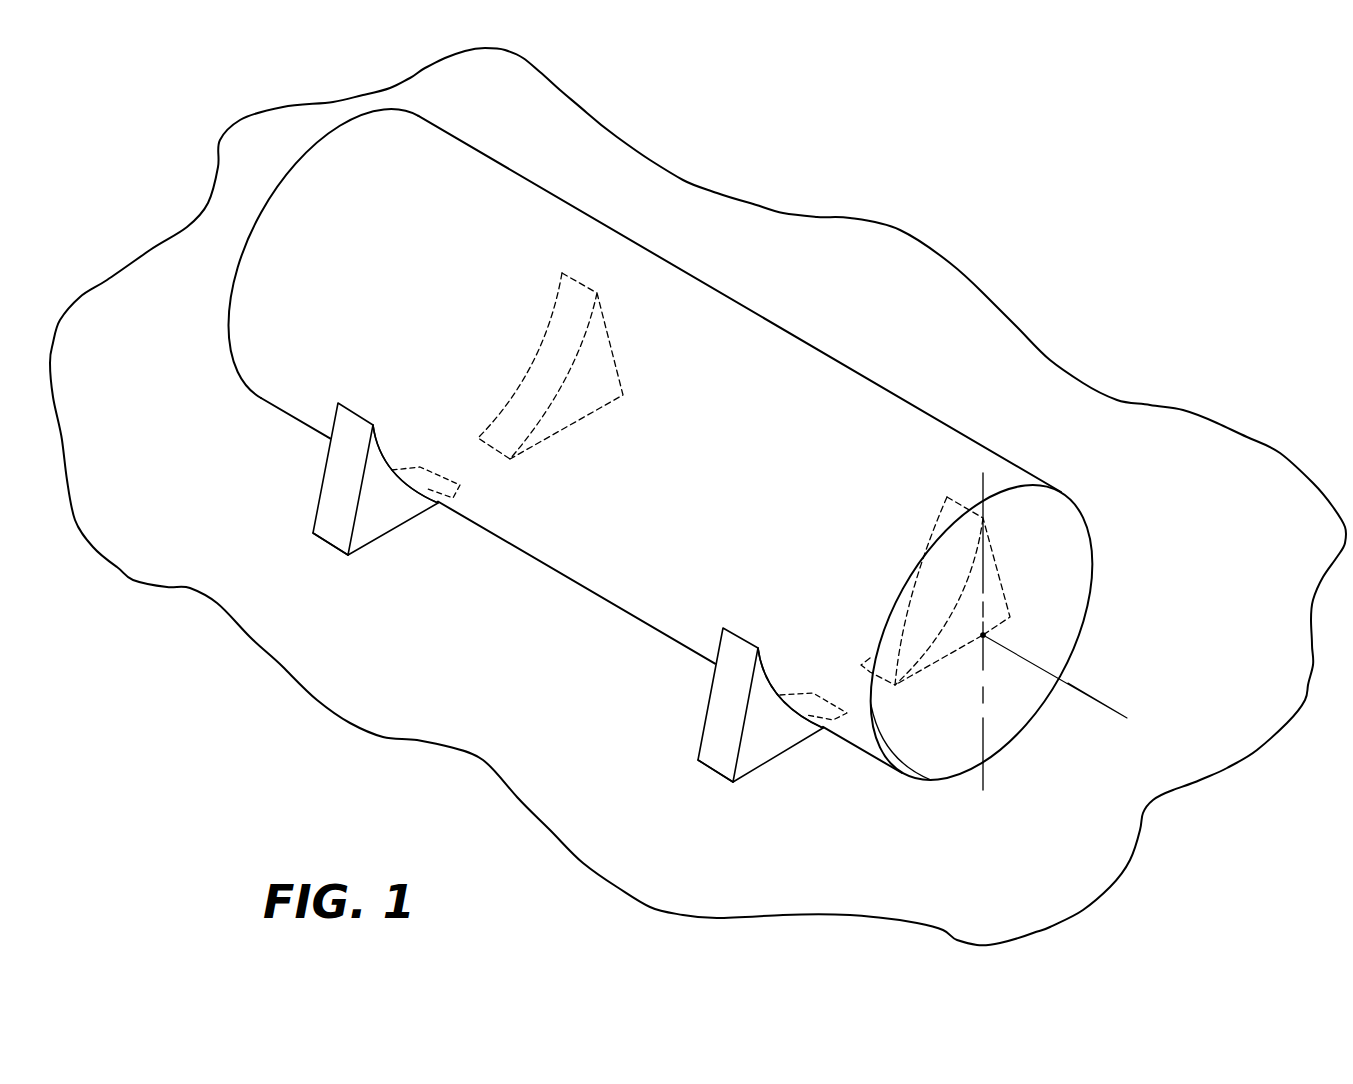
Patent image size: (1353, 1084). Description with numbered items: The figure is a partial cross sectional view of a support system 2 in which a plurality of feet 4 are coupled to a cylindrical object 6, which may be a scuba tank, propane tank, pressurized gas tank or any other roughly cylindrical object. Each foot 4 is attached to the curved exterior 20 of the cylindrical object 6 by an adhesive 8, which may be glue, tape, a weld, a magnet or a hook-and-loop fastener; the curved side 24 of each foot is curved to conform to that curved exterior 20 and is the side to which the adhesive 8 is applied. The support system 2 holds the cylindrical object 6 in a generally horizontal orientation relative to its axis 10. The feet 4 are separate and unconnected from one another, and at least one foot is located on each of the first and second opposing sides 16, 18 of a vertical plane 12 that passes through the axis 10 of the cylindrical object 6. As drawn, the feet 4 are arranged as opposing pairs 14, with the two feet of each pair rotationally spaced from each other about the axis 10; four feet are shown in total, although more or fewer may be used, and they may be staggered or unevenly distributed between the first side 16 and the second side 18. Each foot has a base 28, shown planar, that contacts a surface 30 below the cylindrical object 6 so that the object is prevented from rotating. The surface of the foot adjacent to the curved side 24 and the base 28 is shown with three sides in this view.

The support system 2 is at (945, 313).
The feet 4 is at (335, 465).
The cylindrical object 6 is at (658, 510).
The adhesive 8 is at (380, 442).
The axis 10 is at (1018, 654).
The vertical plane 12 is at (983, 707).
The opposing pairs 14 is at (522, 414).
The first side 16 is at (927, 760).
The second side 18 is at (1065, 579).
The curved exterior 20 is at (763, 660).
The curved side 24 is at (558, 338).
The base 28 is at (330, 547).
The surface 30 is at (502, 641).